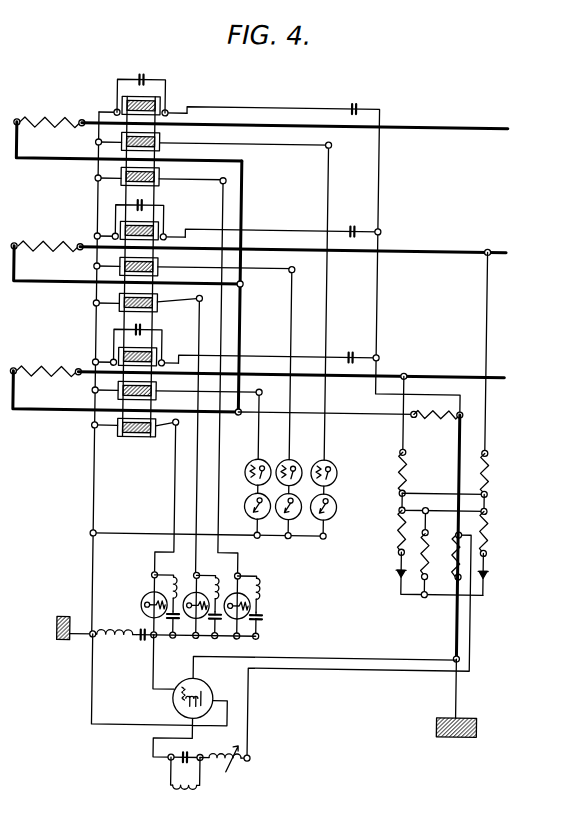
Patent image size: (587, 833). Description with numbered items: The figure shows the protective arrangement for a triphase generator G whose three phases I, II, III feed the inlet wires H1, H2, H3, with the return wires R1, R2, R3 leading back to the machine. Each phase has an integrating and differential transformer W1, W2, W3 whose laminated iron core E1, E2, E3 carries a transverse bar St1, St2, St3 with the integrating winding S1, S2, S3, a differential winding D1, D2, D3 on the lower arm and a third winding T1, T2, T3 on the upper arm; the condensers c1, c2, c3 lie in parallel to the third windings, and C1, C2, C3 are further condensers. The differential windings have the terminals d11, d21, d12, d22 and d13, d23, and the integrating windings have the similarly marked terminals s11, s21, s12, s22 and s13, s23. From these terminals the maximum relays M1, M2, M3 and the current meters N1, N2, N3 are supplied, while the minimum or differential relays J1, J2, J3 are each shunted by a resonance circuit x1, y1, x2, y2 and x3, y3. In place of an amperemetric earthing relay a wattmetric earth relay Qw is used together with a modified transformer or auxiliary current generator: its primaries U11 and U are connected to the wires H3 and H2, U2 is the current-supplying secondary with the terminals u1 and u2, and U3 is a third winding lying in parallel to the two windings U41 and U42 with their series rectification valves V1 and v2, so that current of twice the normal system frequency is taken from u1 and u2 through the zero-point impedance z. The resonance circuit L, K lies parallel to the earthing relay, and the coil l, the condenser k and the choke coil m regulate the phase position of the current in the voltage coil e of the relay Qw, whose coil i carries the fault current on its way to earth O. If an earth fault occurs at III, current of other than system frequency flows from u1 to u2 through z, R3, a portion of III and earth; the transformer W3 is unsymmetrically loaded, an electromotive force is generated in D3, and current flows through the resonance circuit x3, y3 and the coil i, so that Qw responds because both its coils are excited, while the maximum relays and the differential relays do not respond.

The first phase I is at (127, 126).
The second phase II is at (126, 250).
The third phase III is at (124, 376).
The first inlet wire H1 is at (463, 119).
The second inlet wire H2 is at (462, 244).
The third inlet wire H3 is at (452, 369).
The first return wire R1 is at (237, 161).
The second return wire R2 is at (226, 282).
The third return wire R3 is at (230, 413).
The triphase generator G is at (49, 372).
The third winding T1 is at (156, 101).
The third winding T2 is at (163, 218).
The third winding T3 is at (159, 348).
The integrating winding S1 is at (153, 140).
The integrating winding S2 is at (153, 265).
The integrating winding S3 is at (153, 389).
The transverse bar St1 is at (153, 149).
The transverse bar St2 is at (153, 272).
The transverse bar St3 is at (153, 396).
The differential winding D1 is at (153, 176).
The differential winding D2 is at (153, 306).
The differential winding D3 is at (153, 433).
The laminated iron core E1 is at (119, 187).
The laminated iron core E2 is at (120, 312).
The laminated iron core E3 is at (128, 438).
The condenser c1 is at (141, 75).
The condenser c2 is at (148, 198).
The condenser c3 is at (148, 323).
The condenser C1 is at (350, 102).
The condenser C2 is at (350, 225).
The condenser C3 is at (352, 351).
The integrating and differential transformer W1 is at (282, 164).
The integrating and differential transformer W2 is at (282, 292).
The integrating and differential transformer W3 is at (319, 383).
The terminal of integrating winding s11 is at (92, 144).
The terminal of integrating winding s12 is at (92, 268).
The terminal of integrating winding s13 is at (92, 392).
The terminal of integrating winding s21 is at (328, 144).
The terminal of integrating winding s22 is at (292, 272).
The terminal of integrating winding s23 is at (263, 392).
The terminal of differential winding d11 is at (92, 180).
The terminal of differential winding d12 is at (92, 305).
The terminal of differential winding d13 is at (92, 427).
The terminal of differential winding d21 is at (222, 180).
The terminal of differential winding d22 is at (201, 304).
The terminal of differential winding d23 is at (179, 428).
The zero-point impedance z is at (438, 413).
The primary winding U11 is at (407, 471).
The primary winding U is at (489, 475).
The winding with rectification valve U41 is at (399, 523).
The winding with rectification valve U42 is at (492, 525).
The third winding U3 is at (426, 556).
The current-supplying secondary U2 is at (458, 551).
The secondary terminal u1 is at (458, 532).
The secondary terminal u2 is at (459, 577).
The rectification valve V1 is at (396, 571).
The rectification valve v2 is at (491, 571).
The maximum relay M1 is at (328, 460).
The maximum relay M2 is at (293, 460).
The maximum relay M3 is at (262, 460).
The current meter N1 is at (321, 516).
The current meter N2 is at (286, 514).
The current meter N3 is at (254, 514).
The minimum or differential relay J1 is at (253, 600).
The minimum or differential relay J2 is at (188, 618).
The minimum or differential relay J3 is at (145, 598).
The resonance circuit coil x1 is at (254, 585).
The resonance circuit coil x2 is at (211, 584).
The resonance circuit coil x3 is at (162, 576).
The resonance circuit condenser y1 is at (266, 620).
The resonance circuit condenser y2 is at (222, 635).
The resonance circuit condenser y3 is at (178, 639).
The resonance circuit coil L is at (120, 630).
The resonance circuit condenser K is at (145, 651).
The earth connection O is at (485, 710).
The wattmetric earth relay Qw is at (214, 683).
The voltage coil e is at (191, 684).
The coil of relay Qw i is at (179, 699).
The condenser k is at (197, 756).
The choke coil m is at (225, 765).
The coil l is at (194, 788).